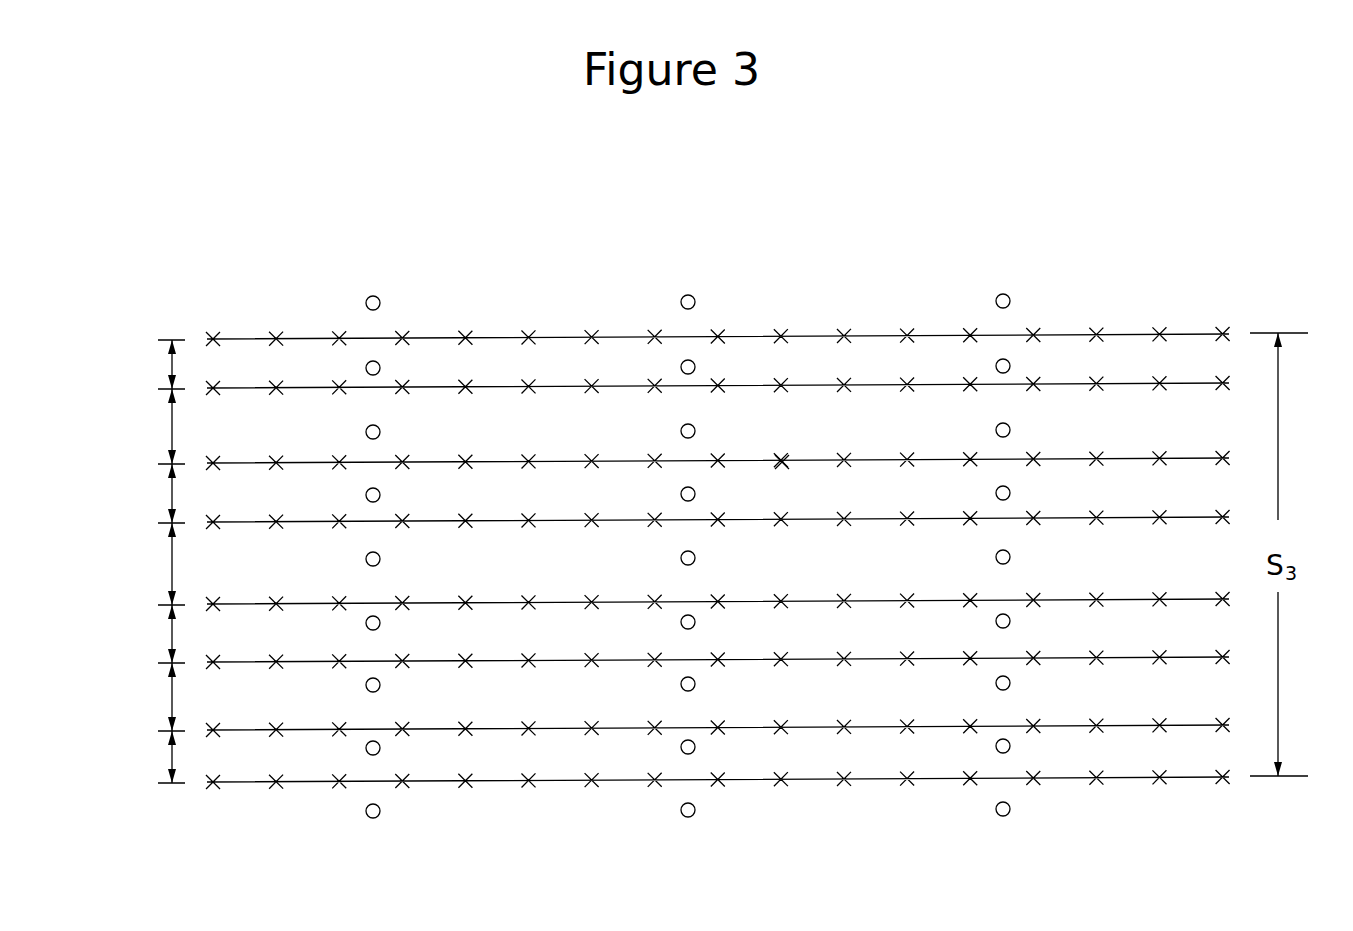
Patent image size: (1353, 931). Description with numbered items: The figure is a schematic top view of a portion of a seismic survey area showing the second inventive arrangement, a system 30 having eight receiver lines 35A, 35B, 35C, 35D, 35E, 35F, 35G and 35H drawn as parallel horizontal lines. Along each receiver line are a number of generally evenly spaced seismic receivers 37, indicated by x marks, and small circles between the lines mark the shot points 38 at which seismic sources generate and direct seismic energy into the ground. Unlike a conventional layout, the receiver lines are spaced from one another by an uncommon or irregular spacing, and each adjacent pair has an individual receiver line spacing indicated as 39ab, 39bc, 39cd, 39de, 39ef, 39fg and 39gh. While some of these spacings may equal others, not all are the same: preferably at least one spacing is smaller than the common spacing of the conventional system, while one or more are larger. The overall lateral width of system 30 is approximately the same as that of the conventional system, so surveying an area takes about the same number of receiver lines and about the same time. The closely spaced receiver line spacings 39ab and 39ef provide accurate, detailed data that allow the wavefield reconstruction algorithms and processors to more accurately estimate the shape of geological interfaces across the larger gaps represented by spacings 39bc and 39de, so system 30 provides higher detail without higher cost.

The system 30 is at (836, 266).
The receiver line 35A is at (427, 338).
The receiver line 35B is at (427, 387).
The receiver line 35C is at (427, 462).
The receiver line 35D is at (423, 521).
The receiver line 35E is at (437, 603).
The receiver line 35F is at (437, 661).
The receiver line 35G is at (437, 729).
The receiver line 35H is at (432, 781).
The seismic receiver 37 is at (782, 462).
The shot point 38 is at (695, 558).
The receiver line spacing 39ab is at (170, 364).
The receiver line spacing 39bc is at (170, 431).
The receiver line spacing 39cd is at (170, 492).
The receiver line spacing 39de is at (171, 557).
The receiver line spacing 39ef is at (171, 621).
The receiver line spacing 39fg is at (171, 687).
The receiver line spacing 39gh is at (171, 746).